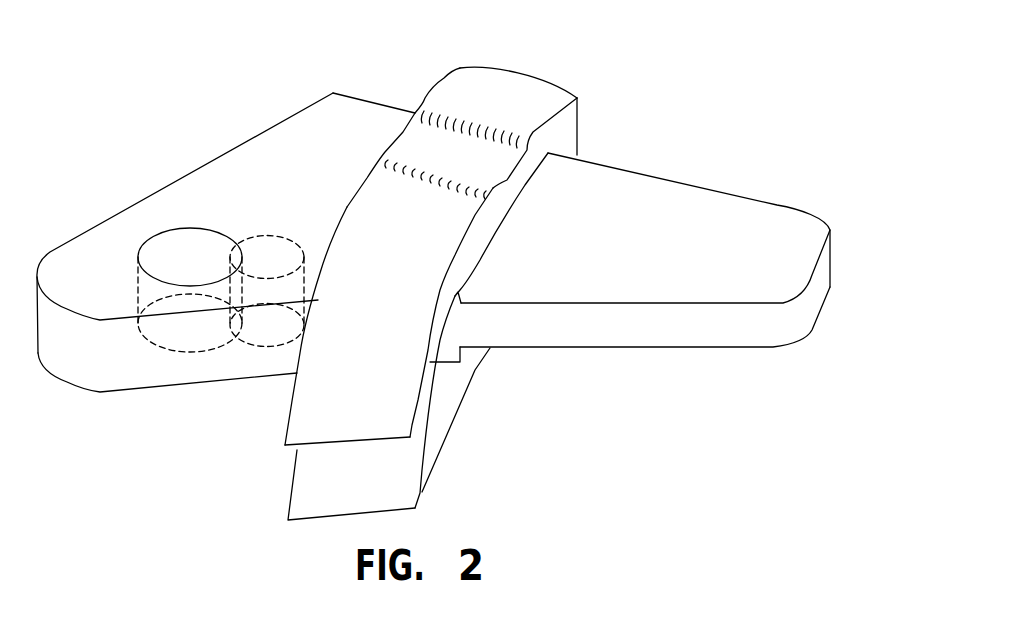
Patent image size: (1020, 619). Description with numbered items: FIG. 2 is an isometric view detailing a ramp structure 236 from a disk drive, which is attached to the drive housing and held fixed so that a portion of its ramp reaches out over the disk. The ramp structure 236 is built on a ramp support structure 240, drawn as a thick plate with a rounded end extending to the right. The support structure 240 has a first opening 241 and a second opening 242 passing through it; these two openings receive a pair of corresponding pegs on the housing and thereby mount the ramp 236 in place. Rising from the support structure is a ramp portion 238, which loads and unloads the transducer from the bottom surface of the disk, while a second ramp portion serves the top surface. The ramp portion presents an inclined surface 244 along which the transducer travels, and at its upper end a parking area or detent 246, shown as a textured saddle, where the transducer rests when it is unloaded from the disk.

The ramp structure 236 is at (650, 75).
The ramp portion 238 is at (383, 203).
The ramp support structure 240 is at (770, 206).
The first opening 241 is at (170, 243).
The second opening 242 is at (272, 252).
The inclined surface 244 is at (337, 370).
The parking area or detent 246 is at (457, 155).